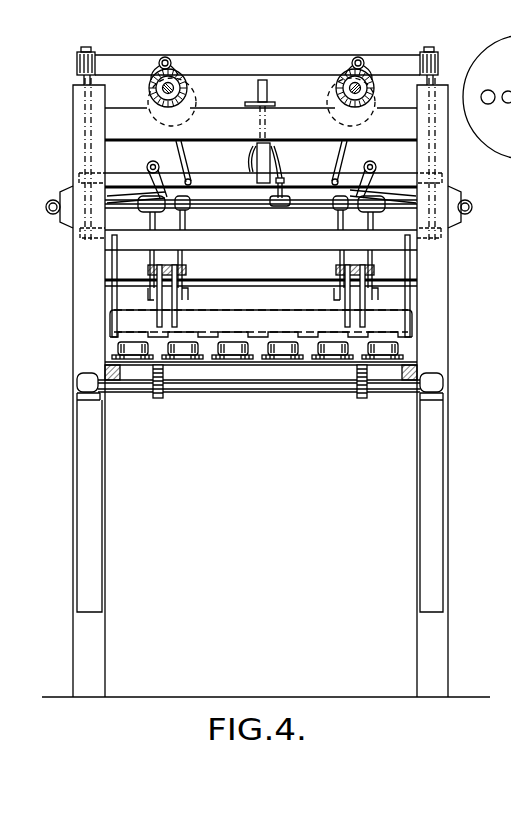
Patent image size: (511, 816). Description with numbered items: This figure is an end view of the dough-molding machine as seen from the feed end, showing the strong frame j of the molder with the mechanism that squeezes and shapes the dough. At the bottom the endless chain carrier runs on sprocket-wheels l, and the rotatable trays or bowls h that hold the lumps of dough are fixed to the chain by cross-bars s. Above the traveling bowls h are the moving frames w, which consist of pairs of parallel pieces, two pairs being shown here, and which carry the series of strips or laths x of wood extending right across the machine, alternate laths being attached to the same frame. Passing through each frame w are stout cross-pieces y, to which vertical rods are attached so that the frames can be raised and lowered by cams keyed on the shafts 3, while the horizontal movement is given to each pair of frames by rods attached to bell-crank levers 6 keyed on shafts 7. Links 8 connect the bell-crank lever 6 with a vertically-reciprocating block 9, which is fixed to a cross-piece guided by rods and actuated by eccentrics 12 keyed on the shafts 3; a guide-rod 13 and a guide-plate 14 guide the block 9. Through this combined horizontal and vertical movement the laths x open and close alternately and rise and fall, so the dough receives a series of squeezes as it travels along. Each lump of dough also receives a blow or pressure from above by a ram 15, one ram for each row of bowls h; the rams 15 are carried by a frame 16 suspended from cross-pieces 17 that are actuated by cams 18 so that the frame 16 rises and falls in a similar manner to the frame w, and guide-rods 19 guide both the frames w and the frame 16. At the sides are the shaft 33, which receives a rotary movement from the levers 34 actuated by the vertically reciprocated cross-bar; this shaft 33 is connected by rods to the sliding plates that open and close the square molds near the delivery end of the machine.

The shaft 3 is at (160, 88).
The bell-crank lever 6 is at (180, 222).
The shaft 7 is at (314, 210).
The link 8 is at (277, 166).
The vertically-reciprocating block 9 is at (257, 162).
The eccentric 12 is at (353, 154).
The guide-rod 13 is at (265, 73).
The guide-plate 14 is at (277, 102).
The ram 15 is at (115, 289).
The frame 16 is at (261, 240).
The cross-piece 17 is at (203, 63).
The cam 18 is at (190, 108).
The guide-rod 19 is at (83, 138).
The shaft 33 is at (47, 206).
The lever 34 is at (125, 196).
The moving frame w is at (152, 270).
The strip x is at (261, 323).
The cross-piece y is at (299, 280).
The frame j is at (274, 231).
The rotatable tray or bowl h is at (417, 359).
The cross-bar s is at (264, 365).
The sprocket-wheel l is at (165, 388).